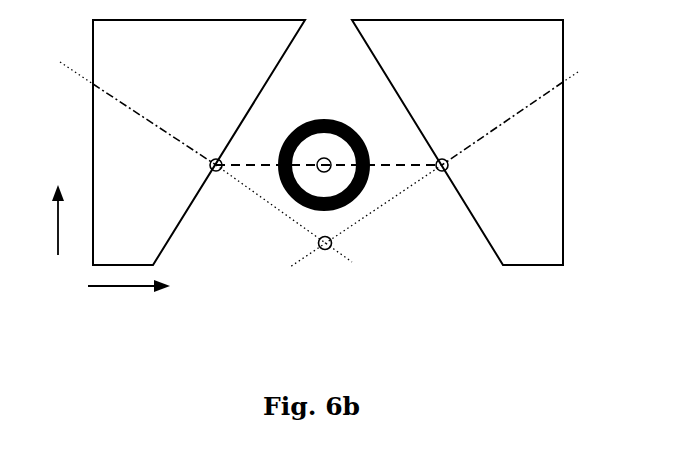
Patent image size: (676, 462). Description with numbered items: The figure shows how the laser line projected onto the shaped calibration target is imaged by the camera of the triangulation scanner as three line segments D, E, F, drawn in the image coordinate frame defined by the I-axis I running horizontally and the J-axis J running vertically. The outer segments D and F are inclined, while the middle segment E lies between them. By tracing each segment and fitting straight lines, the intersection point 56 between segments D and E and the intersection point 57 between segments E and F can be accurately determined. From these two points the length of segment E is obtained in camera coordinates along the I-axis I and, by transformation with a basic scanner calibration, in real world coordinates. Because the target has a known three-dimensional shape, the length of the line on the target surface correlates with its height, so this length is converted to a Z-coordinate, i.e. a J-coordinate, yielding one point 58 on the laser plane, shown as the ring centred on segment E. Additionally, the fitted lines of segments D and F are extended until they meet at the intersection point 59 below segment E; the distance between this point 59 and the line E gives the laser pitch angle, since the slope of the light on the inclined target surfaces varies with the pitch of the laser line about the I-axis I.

The intersection point 56 is at (248, 204).
The intersection point 57 is at (410, 204).
The point on the laser plane 58 is at (315, 146).
The intersection point of segments D and F 59 is at (293, 278).
The line segment D is at (206, 162).
The line segment E is at (329, 121).
The line segment F is at (434, 165).
The I-axis I is at (129, 300).
The J-axis J is at (48, 220).